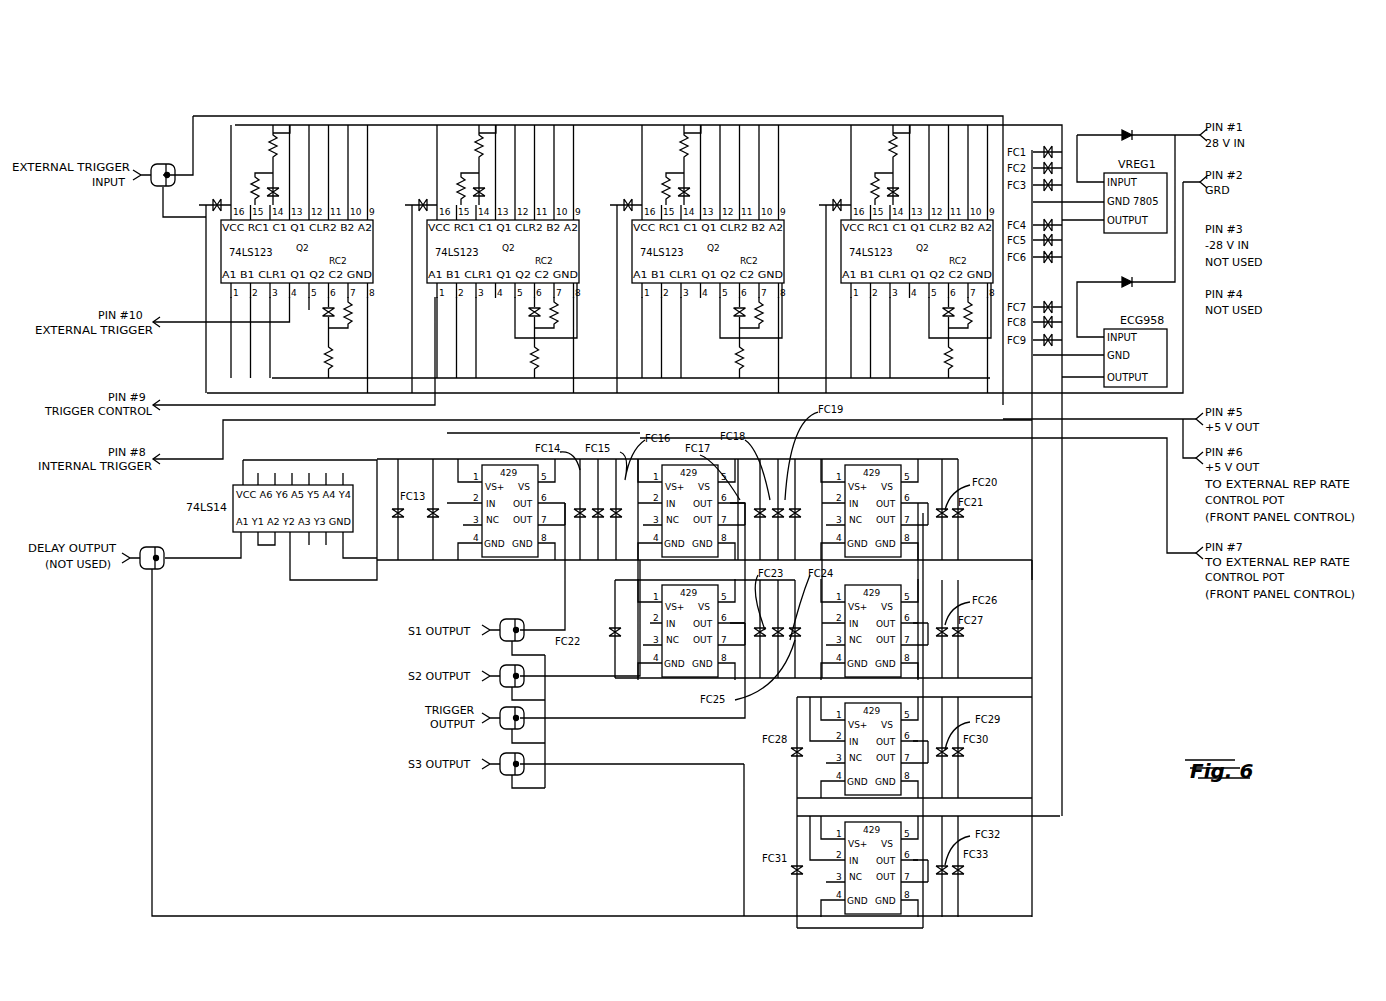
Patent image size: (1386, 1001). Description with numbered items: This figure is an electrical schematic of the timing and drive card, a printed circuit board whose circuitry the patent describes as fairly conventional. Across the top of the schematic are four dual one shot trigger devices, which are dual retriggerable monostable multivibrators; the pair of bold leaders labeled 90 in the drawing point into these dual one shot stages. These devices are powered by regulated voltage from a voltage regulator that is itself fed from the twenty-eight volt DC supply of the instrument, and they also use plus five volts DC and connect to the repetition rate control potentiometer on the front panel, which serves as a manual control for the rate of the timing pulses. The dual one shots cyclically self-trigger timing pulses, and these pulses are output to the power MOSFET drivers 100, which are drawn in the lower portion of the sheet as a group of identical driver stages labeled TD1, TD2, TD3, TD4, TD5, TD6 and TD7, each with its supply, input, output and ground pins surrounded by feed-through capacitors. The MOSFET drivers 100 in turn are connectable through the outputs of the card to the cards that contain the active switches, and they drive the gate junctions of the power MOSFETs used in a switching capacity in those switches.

The pulse arrival time (PAT) circuits 90 is at (843, 222).
The power MOSFET drivers 100 is at (887, 822).
The time delay circuit 1 TD1 is at (511, 520).
The time delay circuit 2 TD2 is at (735, 459).
The time delay circuit 3 TD3 is at (691, 640).
The time delay circuit 4 TD4 is at (874, 520).
The time delay circuit 5 TD5 is at (874, 637).
The time delay circuit 6 TD6 is at (874, 756).
The time delay circuit 7 TD7 is at (874, 882).